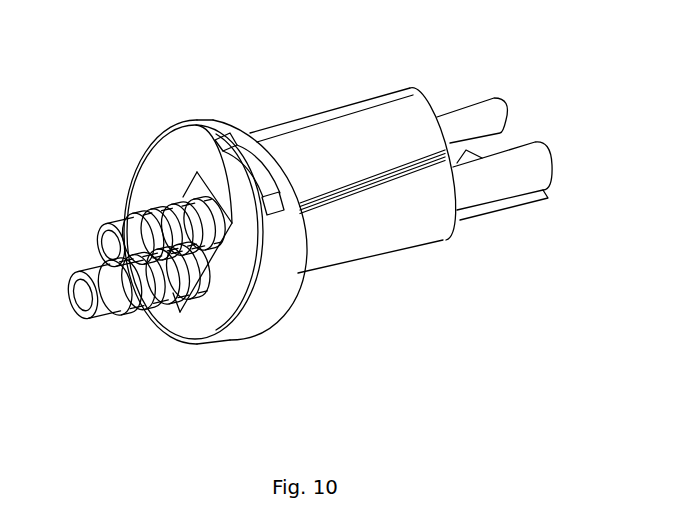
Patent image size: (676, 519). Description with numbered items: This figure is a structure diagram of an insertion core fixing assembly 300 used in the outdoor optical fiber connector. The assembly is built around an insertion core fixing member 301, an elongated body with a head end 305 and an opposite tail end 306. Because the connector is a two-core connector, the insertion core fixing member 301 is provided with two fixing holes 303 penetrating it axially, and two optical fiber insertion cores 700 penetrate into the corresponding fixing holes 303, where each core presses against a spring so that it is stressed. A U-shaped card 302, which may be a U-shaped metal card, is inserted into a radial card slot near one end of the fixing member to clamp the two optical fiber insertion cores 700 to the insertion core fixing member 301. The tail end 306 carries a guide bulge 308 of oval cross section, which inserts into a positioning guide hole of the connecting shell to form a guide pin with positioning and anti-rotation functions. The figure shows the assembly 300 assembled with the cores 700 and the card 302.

The insertion core fixing assembly 300 is at (323, 72).
The insertion core fixing member 301 is at (307, 142).
The U-shaped card 302 is at (258, 192).
The fixing hole 303 is at (178, 312).
The head end 305 is at (223, 303).
The tail end 306 is at (433, 97).
The guide bulge 308 is at (512, 177).
The optical fiber insertion core 700 is at (145, 210).